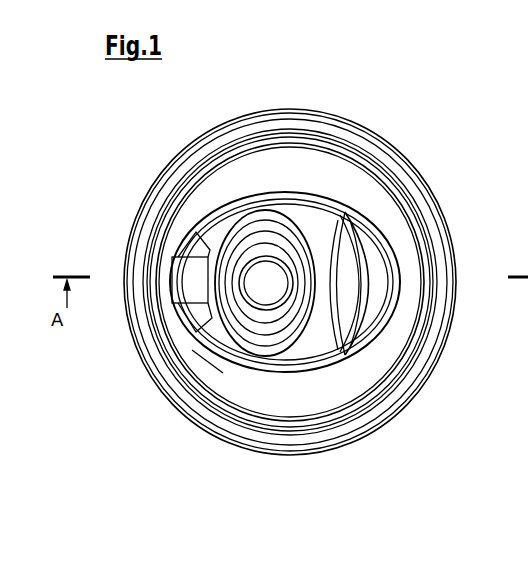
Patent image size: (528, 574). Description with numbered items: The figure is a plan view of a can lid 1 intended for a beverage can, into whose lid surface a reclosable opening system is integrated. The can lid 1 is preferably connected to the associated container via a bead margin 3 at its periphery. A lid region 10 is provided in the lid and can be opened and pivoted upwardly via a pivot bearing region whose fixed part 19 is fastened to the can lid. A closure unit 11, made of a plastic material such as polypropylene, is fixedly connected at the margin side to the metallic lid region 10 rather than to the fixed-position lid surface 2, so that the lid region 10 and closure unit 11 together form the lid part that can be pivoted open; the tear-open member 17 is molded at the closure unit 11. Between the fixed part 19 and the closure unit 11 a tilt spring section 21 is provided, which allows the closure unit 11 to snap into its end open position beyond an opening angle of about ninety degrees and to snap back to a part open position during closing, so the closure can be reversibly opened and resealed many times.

The can lid 1 is at (400, 133).
The lid surface 2 is at (397, 318).
The bead margin 3 is at (410, 167).
The lid region 10 is at (200, 318).
The closure unit 11 is at (180, 360).
The tear-open member 17 is at (222, 222).
The fixed part 19 is at (373, 282).
The tilt spring section 21 is at (372, 226).